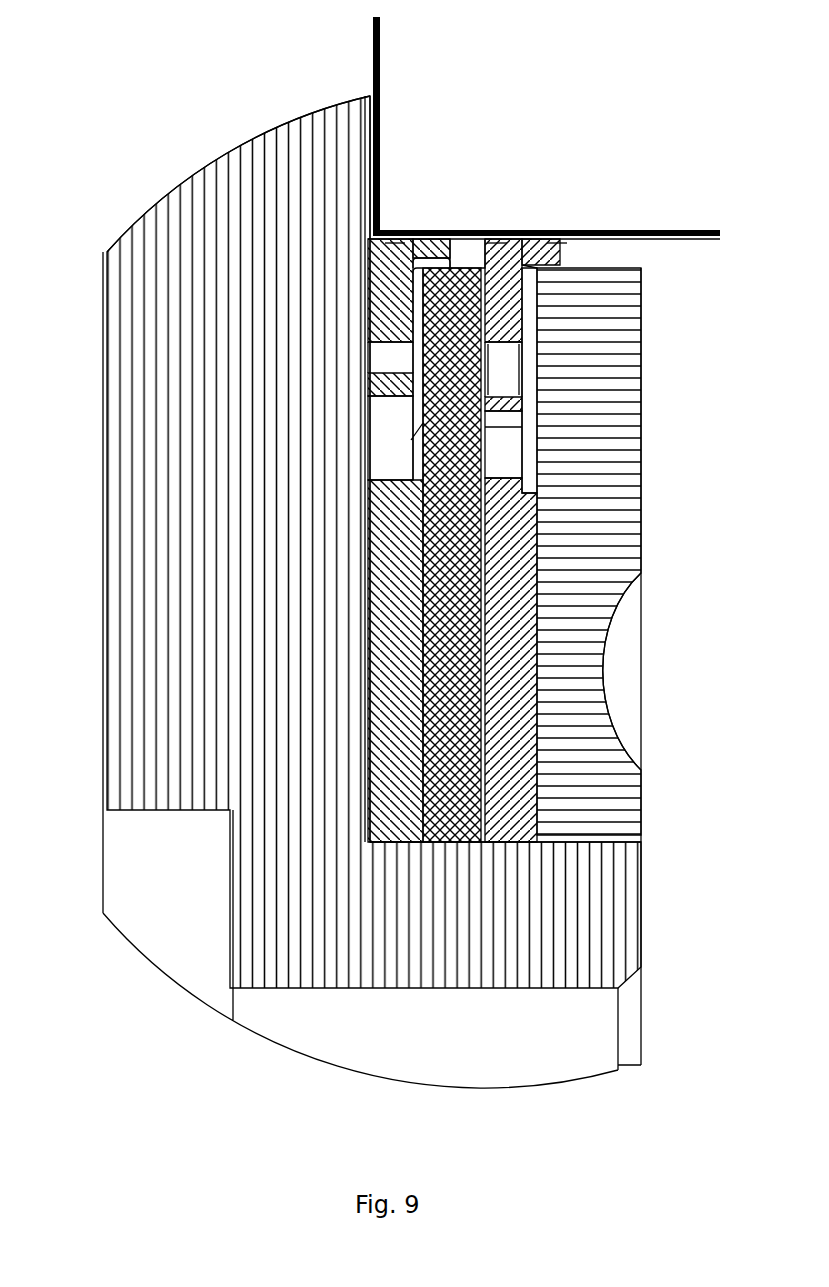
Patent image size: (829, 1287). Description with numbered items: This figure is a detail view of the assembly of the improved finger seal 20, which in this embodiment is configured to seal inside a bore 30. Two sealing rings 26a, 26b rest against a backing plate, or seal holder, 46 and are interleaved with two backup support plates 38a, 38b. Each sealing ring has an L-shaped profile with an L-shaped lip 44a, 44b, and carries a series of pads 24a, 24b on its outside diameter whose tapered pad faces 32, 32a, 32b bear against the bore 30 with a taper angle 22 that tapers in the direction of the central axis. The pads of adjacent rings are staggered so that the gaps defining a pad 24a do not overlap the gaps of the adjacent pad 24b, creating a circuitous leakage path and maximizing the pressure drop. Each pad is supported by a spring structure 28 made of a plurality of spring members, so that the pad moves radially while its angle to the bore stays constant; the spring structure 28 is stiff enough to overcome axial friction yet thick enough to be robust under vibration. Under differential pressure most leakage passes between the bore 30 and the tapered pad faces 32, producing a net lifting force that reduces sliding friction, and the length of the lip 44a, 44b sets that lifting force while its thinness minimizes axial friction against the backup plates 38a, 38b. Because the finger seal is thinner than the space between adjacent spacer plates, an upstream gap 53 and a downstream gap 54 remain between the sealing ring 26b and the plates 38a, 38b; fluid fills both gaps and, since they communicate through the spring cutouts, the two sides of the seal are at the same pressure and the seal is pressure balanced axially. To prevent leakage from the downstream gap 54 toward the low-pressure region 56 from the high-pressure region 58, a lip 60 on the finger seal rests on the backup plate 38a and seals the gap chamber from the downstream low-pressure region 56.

The finger seal 20 is at (639, 85).
The taper angle 22 is at (432, 240).
The pad 24a is at (377, 315).
The adjacent pad 24b is at (512, 283).
The sealing ring 26a is at (383, 262).
The sealing ring 26b is at (510, 275).
The spring structure 28 is at (385, 398).
The bore 30 is at (695, 231).
The tapered pad face 32 is at (557, 240).
The tapered pad face 32a is at (395, 240).
The tapered pad face 32b is at (497, 240).
The backup plate 38a is at (600, 805).
The backup plate 38b is at (455, 795).
The L-shaped lip 44a is at (537, 297).
The L-shaped lip 44b is at (567, 258).
The backing plate (seal holder) 46 is at (200, 658).
The upstream gap 53 is at (527, 320).
The downstream gap 54 is at (537, 367).
The low-pressure region 56 is at (772, 553).
The high-pressure region 58 is at (229, 121).
The lip 60 is at (567, 253).